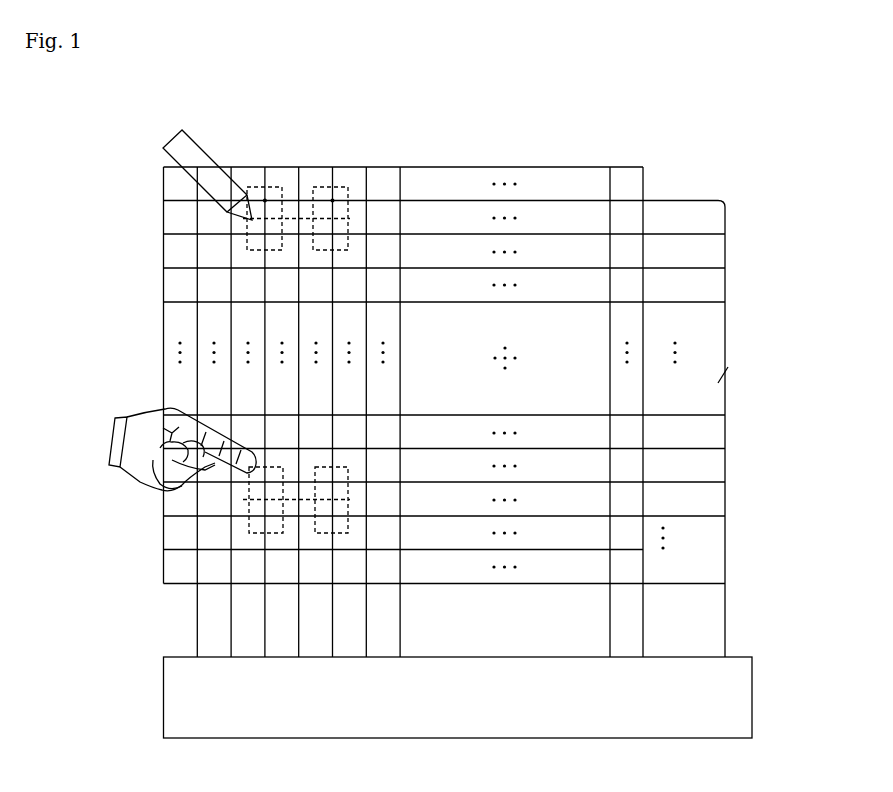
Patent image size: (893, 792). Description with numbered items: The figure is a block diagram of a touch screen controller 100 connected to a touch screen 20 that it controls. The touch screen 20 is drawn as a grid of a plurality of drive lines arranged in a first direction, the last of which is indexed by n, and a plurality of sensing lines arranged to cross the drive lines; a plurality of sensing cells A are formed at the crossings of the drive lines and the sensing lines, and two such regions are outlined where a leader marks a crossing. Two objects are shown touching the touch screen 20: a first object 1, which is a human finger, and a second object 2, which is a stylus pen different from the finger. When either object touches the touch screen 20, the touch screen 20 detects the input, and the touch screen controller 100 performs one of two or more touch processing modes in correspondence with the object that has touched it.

The first object 1 is at (147, 420).
The second object 2 is at (196, 151).
The touch screen 20 is at (163, 218).
The touch screen controller 100 is at (753, 675).
The sensing cell A is at (265, 200).
The number of drive lines n is at (729, 375).